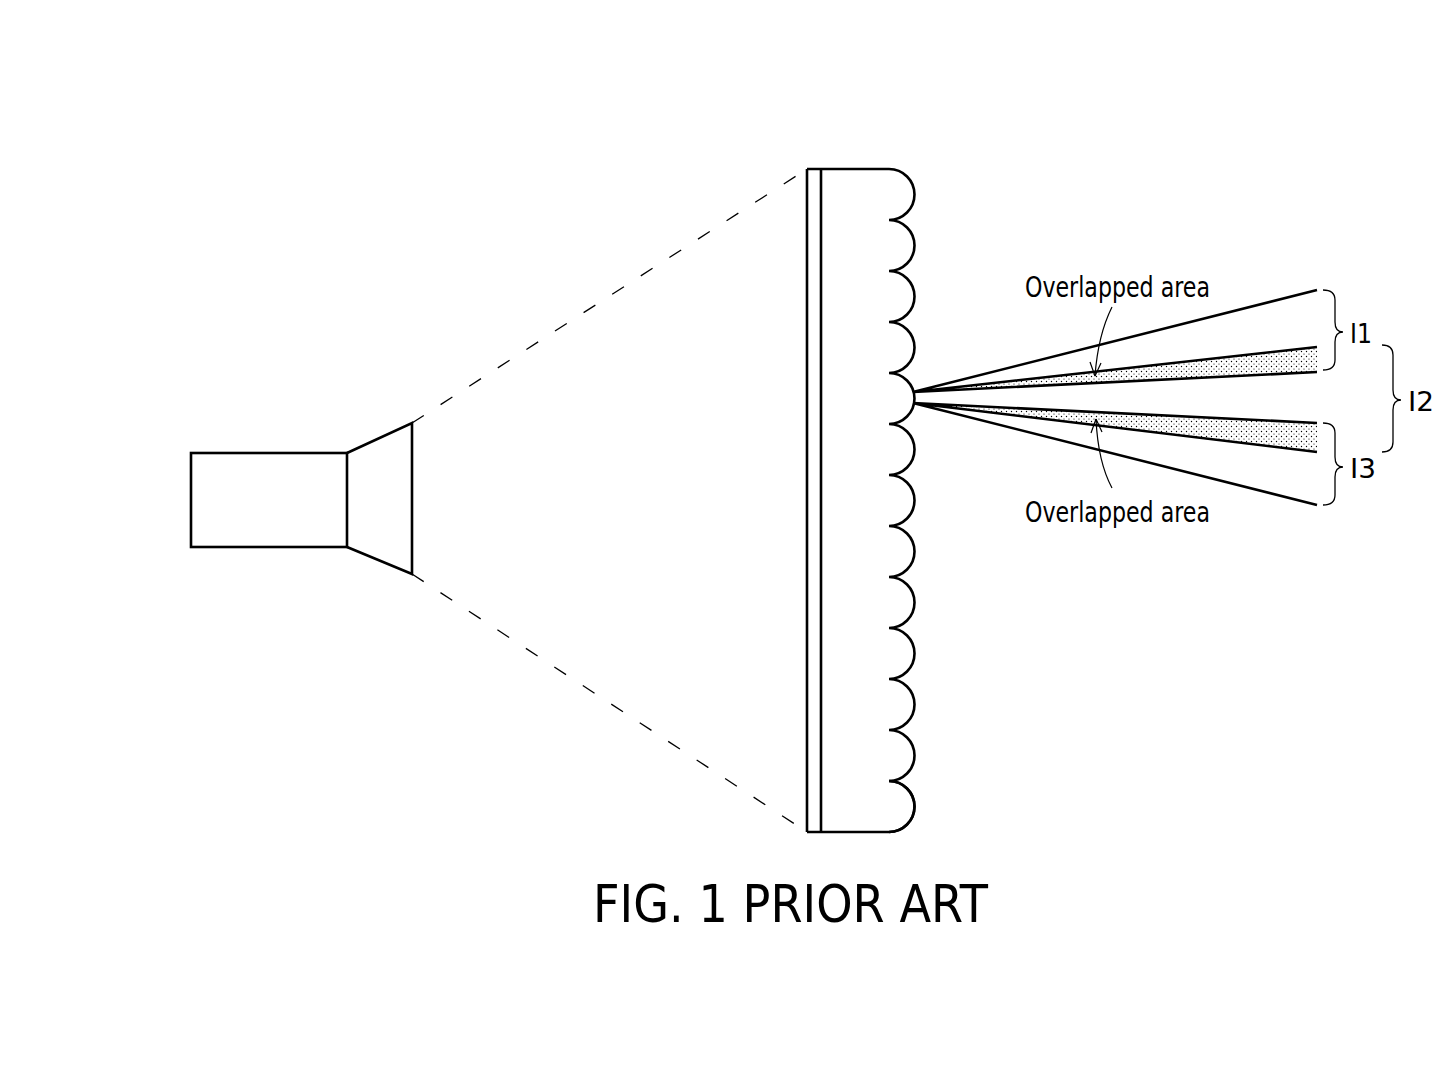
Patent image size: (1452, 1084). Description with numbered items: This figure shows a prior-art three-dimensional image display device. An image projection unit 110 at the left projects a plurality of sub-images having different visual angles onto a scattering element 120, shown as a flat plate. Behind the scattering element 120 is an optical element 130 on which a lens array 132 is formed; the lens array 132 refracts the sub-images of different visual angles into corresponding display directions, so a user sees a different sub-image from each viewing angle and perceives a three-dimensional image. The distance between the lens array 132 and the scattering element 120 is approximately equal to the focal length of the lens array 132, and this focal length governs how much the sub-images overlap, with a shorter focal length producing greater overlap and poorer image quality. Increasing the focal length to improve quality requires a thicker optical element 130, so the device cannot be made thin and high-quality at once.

The image projection unit 110 is at (226, 452).
The scattering element 120 is at (815, 178).
The optical element 130 is at (875, 155).
The lens array 132 is at (898, 808).